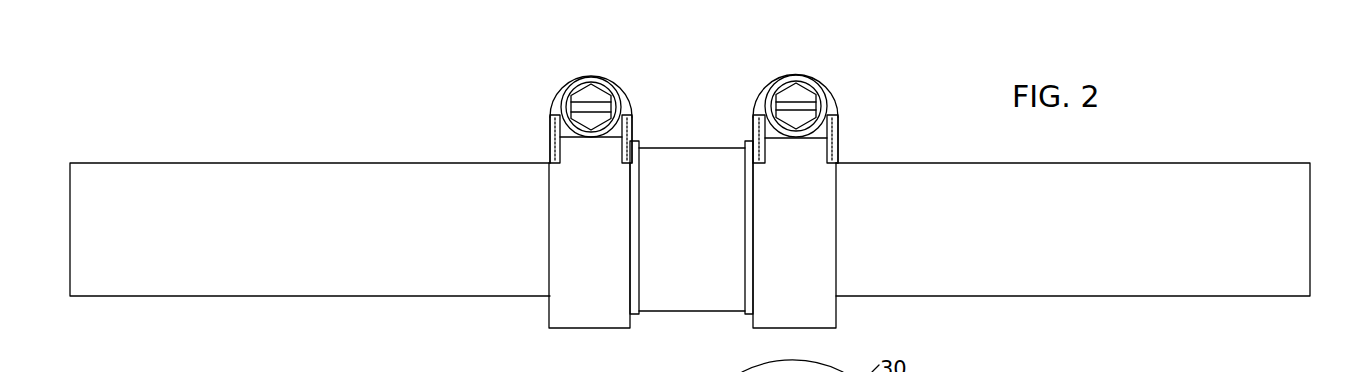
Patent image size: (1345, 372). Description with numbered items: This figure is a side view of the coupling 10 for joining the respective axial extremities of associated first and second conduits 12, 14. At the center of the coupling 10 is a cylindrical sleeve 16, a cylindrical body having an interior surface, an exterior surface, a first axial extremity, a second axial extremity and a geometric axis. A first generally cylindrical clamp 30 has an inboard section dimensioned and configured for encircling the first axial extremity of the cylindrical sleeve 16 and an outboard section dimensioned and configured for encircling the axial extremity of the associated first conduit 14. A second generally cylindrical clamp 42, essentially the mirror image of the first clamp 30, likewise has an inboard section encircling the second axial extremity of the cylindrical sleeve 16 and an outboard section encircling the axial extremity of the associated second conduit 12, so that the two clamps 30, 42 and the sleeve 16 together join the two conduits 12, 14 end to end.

The coupling 10 is at (656, 210).
The second conduit 12 is at (152, 163).
The first conduit 14 is at (1072, 163).
The cylindrical sleeve 16 is at (677, 311).
The first generally cylindrical clamp 30 is at (830, 93).
The second generally cylindrical clamp 42 is at (552, 102).